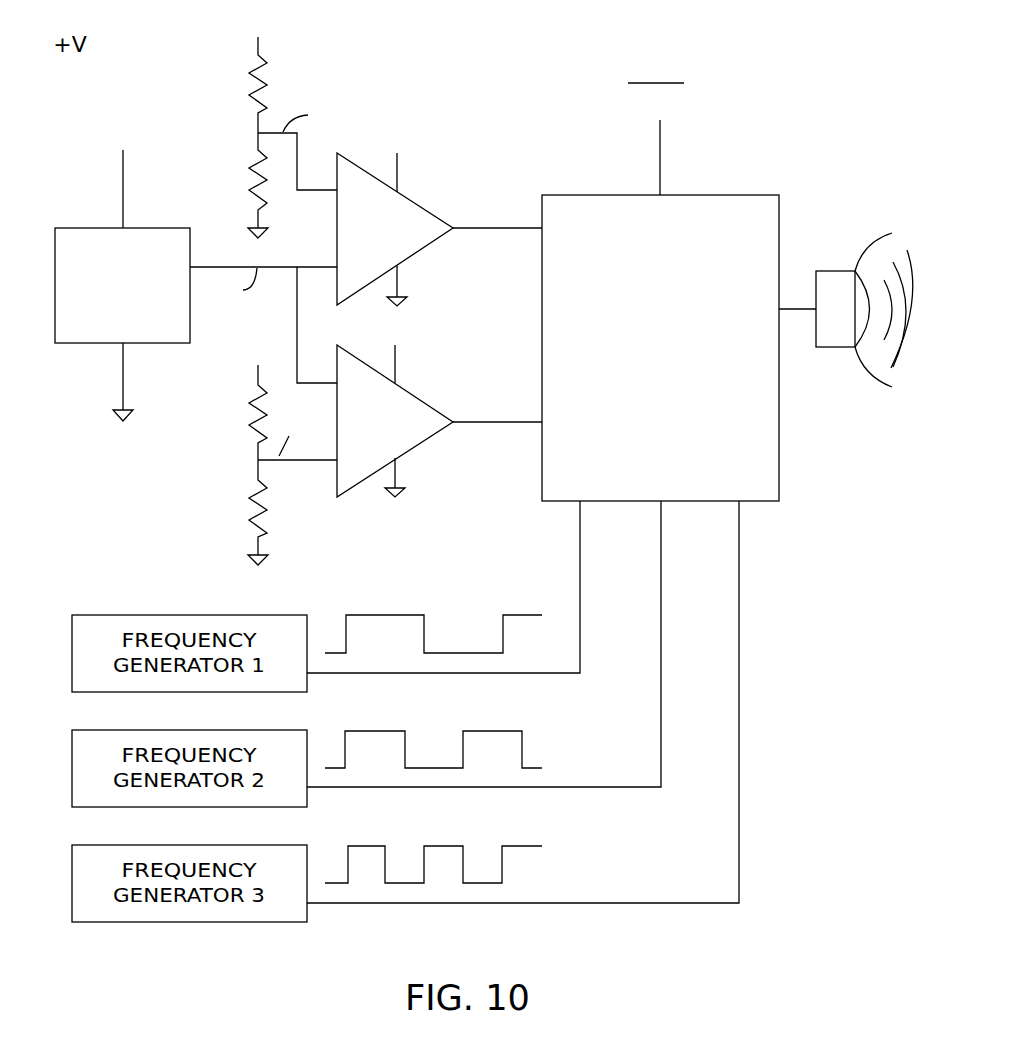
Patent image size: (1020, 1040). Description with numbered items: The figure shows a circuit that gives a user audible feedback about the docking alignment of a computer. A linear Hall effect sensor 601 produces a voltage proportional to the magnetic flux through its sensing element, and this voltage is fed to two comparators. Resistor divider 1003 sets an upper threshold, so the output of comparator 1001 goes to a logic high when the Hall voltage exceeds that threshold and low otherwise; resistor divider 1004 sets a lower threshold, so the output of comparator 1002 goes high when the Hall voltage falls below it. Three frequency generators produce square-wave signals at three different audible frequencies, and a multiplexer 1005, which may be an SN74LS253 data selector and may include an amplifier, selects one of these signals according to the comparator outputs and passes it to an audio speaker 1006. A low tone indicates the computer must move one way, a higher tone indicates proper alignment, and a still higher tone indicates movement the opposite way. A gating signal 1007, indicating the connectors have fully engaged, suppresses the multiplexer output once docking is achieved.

The Hall effect sensor 601 is at (107, 345).
The comparator 1001 is at (407, 196).
The comparator 1002 is at (406, 388).
The resistor divider 1003 is at (273, 62).
The resistor divider 1004 is at (268, 530).
The multiplexer 1005 is at (779, 448).
The audio speaker 1006 is at (887, 232).
The gating signal 1007 is at (661, 128).